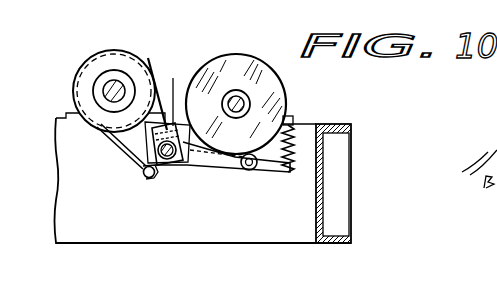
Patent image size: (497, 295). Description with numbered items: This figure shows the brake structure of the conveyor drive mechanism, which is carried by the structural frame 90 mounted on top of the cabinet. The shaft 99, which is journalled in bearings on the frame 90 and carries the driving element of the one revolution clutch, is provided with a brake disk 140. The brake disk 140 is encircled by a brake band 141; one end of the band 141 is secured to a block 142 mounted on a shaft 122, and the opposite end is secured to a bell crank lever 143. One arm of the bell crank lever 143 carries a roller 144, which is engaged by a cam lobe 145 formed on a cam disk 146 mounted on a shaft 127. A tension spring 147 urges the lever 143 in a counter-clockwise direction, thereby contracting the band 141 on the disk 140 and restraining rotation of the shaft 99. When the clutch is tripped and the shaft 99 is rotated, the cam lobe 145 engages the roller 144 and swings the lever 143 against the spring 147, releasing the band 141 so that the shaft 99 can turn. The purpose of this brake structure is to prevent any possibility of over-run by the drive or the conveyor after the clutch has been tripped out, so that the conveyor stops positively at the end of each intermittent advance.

The structural frame 90 is at (322, 171).
The shaft 99 is at (118, 88).
The shaft 122 is at (183, 165).
The shaft 127 is at (238, 103).
The brake disk 140 is at (112, 60).
The brake band 141 is at (108, 140).
The block 142 is at (230, 168).
The bell crank lever 143 is at (160, 176).
The roller 144 is at (251, 170).
The cam lobe 145 is at (169, 91).
The cam disk 146 is at (227, 57).
The tension spring 147 is at (293, 128).